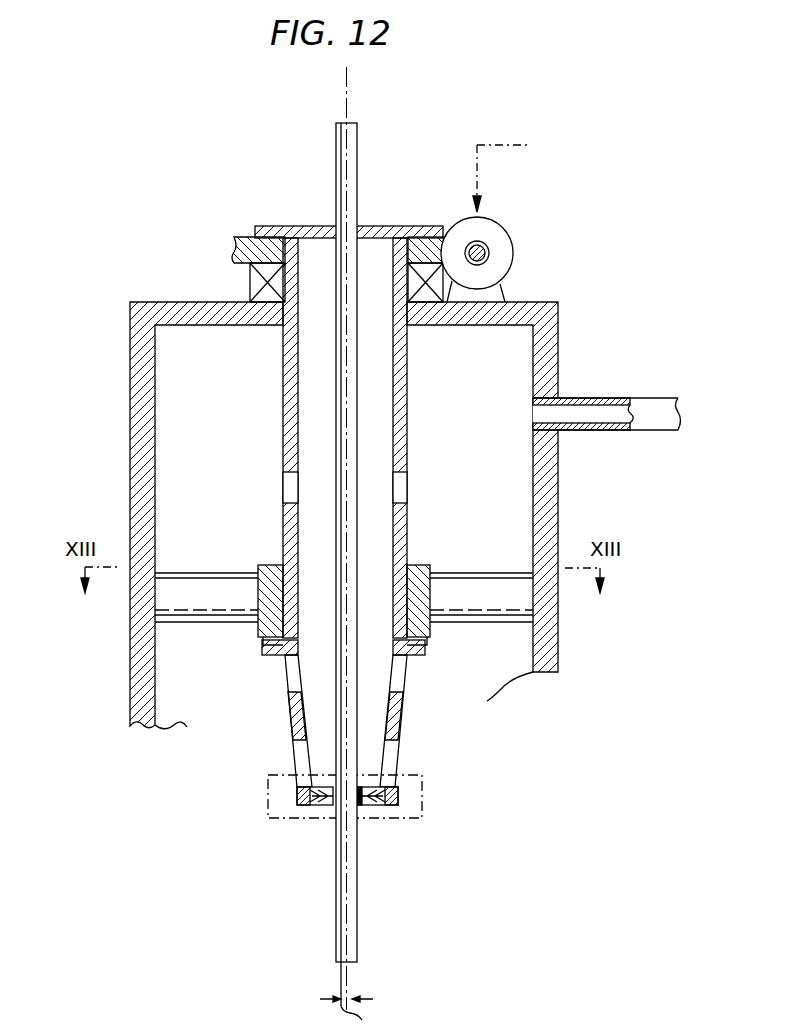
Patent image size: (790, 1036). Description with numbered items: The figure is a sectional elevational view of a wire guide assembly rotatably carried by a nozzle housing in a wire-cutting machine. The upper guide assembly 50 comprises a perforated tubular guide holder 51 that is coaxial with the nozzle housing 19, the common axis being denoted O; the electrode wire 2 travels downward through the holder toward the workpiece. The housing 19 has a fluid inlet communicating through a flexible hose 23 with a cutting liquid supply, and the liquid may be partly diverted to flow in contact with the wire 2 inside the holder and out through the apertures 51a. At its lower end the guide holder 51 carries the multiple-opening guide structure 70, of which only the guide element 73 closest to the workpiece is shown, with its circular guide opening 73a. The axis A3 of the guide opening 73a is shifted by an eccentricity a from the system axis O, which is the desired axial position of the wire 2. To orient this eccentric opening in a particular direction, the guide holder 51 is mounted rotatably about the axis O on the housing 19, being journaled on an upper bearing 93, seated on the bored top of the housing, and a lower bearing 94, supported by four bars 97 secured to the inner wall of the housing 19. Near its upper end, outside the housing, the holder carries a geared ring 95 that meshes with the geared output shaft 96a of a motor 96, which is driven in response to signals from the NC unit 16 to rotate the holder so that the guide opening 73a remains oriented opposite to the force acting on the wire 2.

The electrode wire 2 is at (357, 177).
The NC unit 16 is at (516, 172).
The nozzle housing 19 is at (557, 487).
The flexible hose 23 is at (638, 401).
The upper guide assembly 50 is at (492, 473).
The tubular guide holder 51 is at (283, 428).
The apertures 51a is at (283, 485).
The guide structure 70 is at (422, 784).
The guide element 73 is at (353, 803).
The guide opening 73a is at (357, 804).
The upper bearing 93 is at (250, 284).
The lower bearing 94 is at (263, 568).
The geared ring 95 is at (233, 250).
The motor 96 is at (499, 224).
The geared output shaft 96a is at (489, 252).
The bars 97 is at (203, 624).
The system axis O is at (380, 977).
The axis of the guide opening A3 is at (392, 976).
The eccentricity a is at (347, 998).